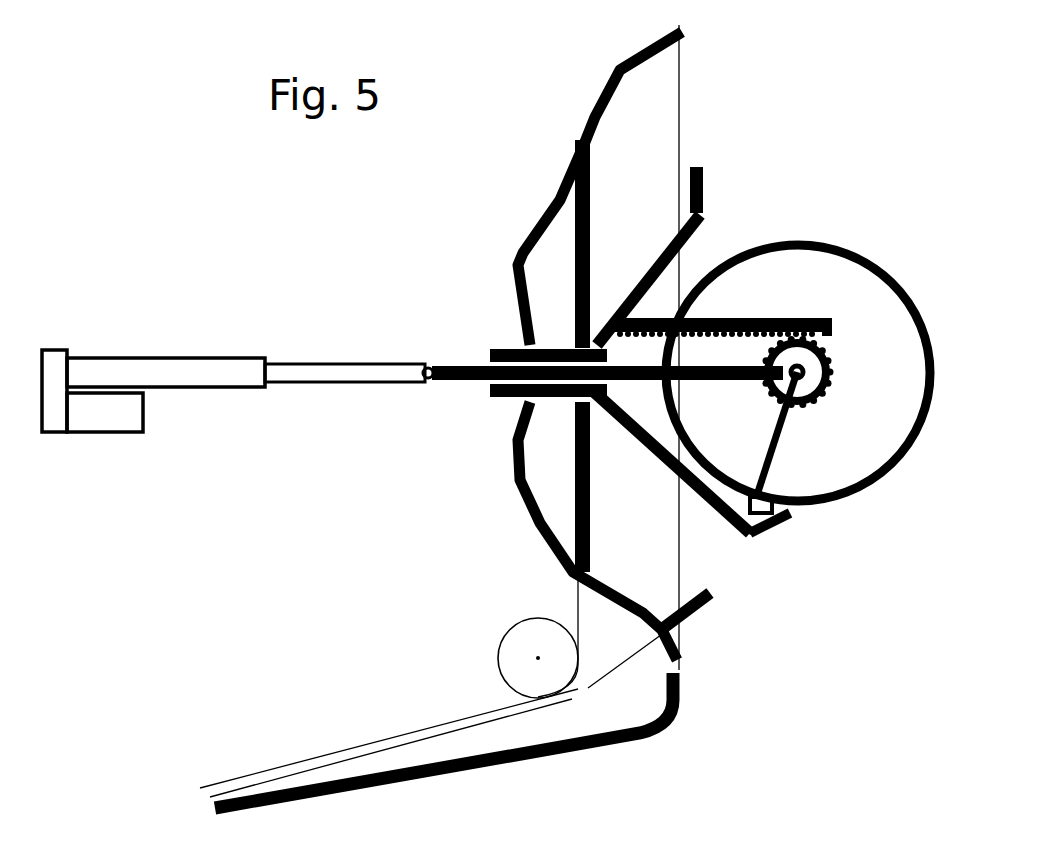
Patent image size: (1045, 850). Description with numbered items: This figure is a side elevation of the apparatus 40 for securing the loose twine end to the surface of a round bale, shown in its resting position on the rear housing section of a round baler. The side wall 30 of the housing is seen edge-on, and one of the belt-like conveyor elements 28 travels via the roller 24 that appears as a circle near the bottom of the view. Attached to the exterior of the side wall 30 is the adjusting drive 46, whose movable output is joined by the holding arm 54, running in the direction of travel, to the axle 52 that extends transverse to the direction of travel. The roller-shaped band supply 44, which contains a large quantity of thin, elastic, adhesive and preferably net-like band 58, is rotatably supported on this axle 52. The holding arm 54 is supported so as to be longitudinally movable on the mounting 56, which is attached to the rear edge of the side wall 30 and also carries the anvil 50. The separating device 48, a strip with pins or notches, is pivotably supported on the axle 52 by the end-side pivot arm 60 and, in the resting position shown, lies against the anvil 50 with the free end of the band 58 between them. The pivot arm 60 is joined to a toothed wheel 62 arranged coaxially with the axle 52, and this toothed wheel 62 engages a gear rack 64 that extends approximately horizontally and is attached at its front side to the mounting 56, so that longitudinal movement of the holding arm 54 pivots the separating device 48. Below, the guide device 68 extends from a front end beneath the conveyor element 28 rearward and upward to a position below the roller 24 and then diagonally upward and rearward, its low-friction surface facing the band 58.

The roller 24 is at (532, 650).
The conveyor elements 28 is at (593, 212).
The side wall 30 is at (598, 73).
The apparatus 40 is at (872, 245).
The band supply 44 is at (903, 283).
The adjusting drive 46 is at (157, 382).
The separating device 48 is at (773, 508).
The anvil 50 is at (777, 527).
The axle 52 is at (830, 353).
The holding arm 54 is at (453, 363).
The mounting 56 is at (680, 263).
The band 58 is at (770, 492).
The pivot arm 60 is at (780, 432).
The toothed wheel 62 is at (805, 368).
The gear rack 64 is at (787, 213).
The guide device 68 is at (697, 613).